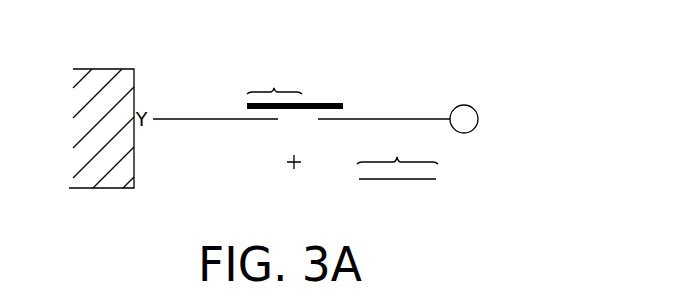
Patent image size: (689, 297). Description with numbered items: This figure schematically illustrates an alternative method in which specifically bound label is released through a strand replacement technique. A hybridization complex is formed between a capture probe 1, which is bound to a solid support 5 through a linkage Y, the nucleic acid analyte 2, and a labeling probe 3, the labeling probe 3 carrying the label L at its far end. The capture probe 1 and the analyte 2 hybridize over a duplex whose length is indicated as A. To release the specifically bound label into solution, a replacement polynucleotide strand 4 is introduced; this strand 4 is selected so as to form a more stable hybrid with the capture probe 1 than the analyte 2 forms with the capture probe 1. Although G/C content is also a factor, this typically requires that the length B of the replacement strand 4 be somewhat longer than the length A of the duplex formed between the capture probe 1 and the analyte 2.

The capture probe 1 is at (223, 120).
The nucleic acid analyte 2 is at (326, 103).
The labeling probe 3 is at (421, 119).
The replacement polynucleotide strand 4 is at (400, 180).
The solid support 5 is at (74, 166).
The length of the duplex formed between the capture probe and the analyte A is at (274, 78).
The length of the replacement strand B is at (397, 145).
The light source L is at (464, 119).